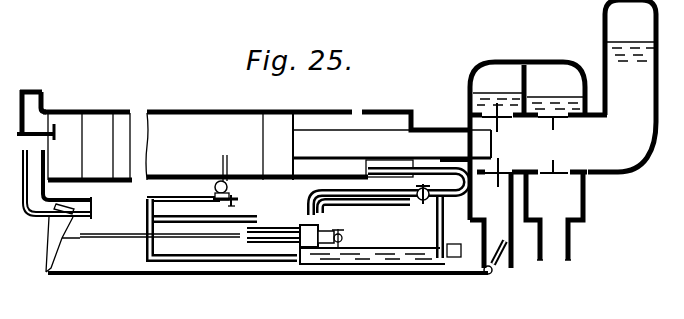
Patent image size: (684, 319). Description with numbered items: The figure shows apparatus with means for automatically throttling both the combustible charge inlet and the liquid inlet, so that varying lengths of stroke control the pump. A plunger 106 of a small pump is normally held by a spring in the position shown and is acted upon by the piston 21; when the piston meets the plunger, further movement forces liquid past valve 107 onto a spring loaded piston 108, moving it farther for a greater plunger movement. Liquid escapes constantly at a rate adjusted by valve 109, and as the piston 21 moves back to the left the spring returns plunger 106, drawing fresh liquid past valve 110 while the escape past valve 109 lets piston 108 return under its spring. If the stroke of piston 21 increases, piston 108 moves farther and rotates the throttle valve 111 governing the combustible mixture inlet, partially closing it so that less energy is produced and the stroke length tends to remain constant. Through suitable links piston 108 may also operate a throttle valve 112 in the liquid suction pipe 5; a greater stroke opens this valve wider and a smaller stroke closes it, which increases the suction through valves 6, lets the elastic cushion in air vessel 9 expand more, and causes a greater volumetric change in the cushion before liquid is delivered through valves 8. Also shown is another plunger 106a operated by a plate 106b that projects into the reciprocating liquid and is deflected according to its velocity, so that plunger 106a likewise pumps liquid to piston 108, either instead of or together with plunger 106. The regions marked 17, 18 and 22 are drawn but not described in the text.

The inlet for the supply liquid 5 is at (493, 275).
The supply valves 6 is at (498, 167).
The delivery valves 8 is at (551, 123).
The air vessel 9 is at (622, 86).
The chamber 17 is at (95, 128).
The chamber 18 is at (257, 146).
The piston 21 is at (275, 128).
The chamber 22 is at (330, 143).
The plunger 106 is at (388, 167).
The plunger 106a is at (202, 194).
The plate 106b is at (229, 169).
The valve 107 is at (419, 201).
The spring loaded piston 108 is at (292, 229).
The valve 109 is at (334, 239).
The valve 110 is at (454, 200).
The throttle valve 111 is at (76, 208).
The throttle valve 112 is at (502, 257).